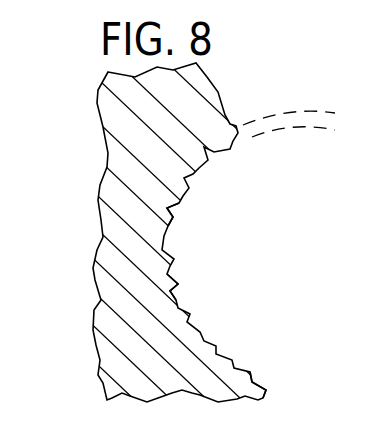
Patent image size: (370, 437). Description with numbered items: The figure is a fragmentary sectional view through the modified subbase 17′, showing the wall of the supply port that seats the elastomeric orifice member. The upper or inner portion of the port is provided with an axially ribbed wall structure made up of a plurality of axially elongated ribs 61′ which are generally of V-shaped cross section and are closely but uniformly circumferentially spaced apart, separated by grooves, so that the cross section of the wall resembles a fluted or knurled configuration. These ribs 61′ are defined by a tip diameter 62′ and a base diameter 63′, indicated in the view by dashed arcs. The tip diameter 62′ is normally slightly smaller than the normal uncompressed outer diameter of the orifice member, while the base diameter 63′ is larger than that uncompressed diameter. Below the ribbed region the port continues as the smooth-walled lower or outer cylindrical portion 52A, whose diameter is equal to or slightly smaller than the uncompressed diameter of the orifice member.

The subbase 17′ is at (120, 167).
The base diameter 63′ is at (272, 115).
The tip diameter 62′ is at (287, 128).
The axially elongated ribs 61′ is at (180, 293).
The lower or outer cylindrical portion 52A is at (238, 355).